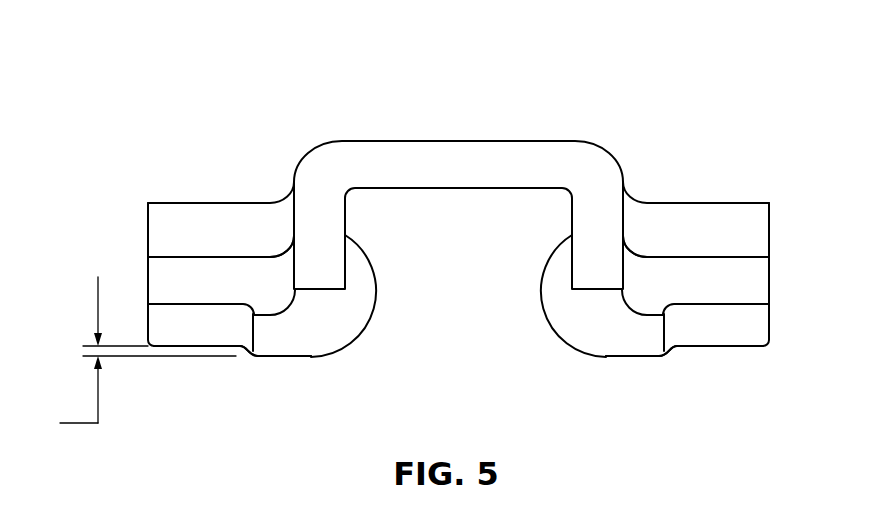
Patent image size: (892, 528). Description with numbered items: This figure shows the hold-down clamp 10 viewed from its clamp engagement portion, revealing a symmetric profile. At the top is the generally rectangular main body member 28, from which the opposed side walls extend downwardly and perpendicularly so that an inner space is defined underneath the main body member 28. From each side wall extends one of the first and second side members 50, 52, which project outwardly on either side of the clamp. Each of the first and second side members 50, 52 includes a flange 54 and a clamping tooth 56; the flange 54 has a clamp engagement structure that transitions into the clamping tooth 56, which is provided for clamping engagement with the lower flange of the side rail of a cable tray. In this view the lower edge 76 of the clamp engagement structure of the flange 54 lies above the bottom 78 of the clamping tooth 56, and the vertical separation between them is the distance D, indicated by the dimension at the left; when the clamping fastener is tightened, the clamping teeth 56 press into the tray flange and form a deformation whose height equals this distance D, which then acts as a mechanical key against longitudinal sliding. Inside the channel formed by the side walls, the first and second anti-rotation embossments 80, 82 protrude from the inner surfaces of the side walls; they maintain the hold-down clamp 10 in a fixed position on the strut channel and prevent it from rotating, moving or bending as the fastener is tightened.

The hold-down clamp 10 is at (549, 113).
The main body member 28 is at (460, 152).
The first side member 50 is at (698, 168).
The second side member 52 is at (206, 172).
The flange 54 is at (155, 270).
The clamping tooth 56 is at (292, 340).
The lower edge 76 is at (183, 335).
The bottom 78 is at (268, 343).
The first anti-rotation embossment 80 is at (351, 324).
The second anti-rotation embossment 82 is at (567, 316).
The distance D is at (137, 357).